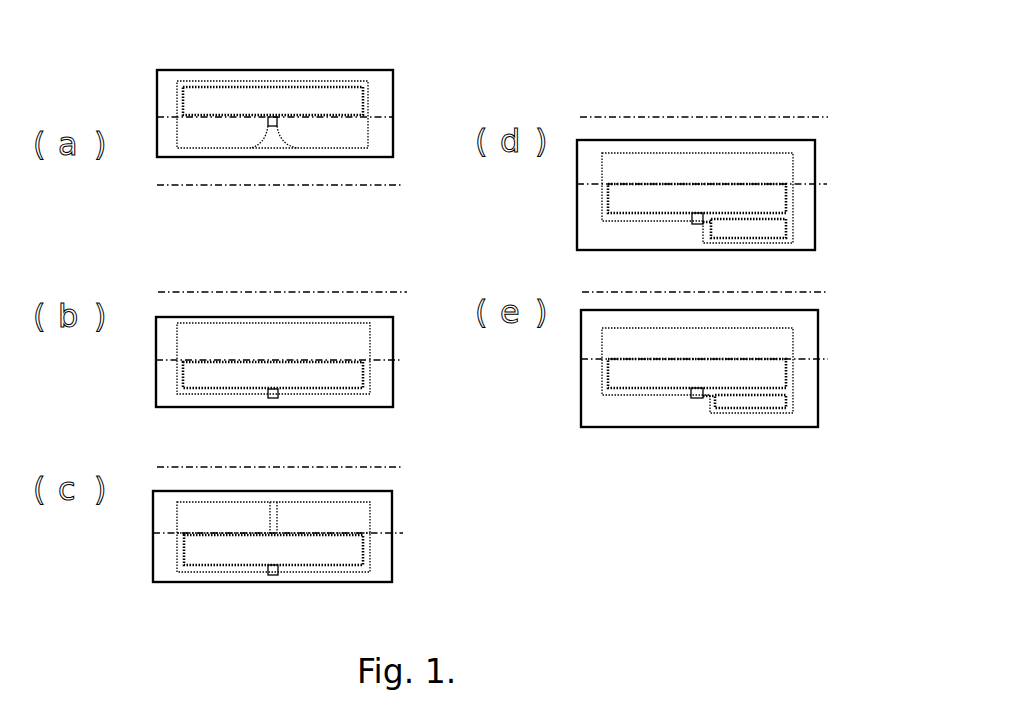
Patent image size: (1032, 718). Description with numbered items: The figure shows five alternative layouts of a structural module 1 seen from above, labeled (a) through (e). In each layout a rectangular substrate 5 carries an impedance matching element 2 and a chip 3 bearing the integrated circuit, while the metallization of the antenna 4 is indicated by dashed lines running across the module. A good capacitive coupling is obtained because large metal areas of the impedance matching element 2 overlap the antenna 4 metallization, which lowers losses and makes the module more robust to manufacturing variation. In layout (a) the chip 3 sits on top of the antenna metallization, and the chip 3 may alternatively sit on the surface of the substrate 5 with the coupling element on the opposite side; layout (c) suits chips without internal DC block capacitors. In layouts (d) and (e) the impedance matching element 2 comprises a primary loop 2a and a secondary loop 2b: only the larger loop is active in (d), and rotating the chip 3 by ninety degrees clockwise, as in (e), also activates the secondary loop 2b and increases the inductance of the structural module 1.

The structural module 1 is at (255, 68).
The impedance matching element 2 is at (363, 83).
The primary loop 2a is at (786, 203).
The secondary loop 2b is at (783, 238).
The chip 3 is at (267, 123).
The antenna 4 is at (340, 163).
The substrate 5 is at (378, 137).